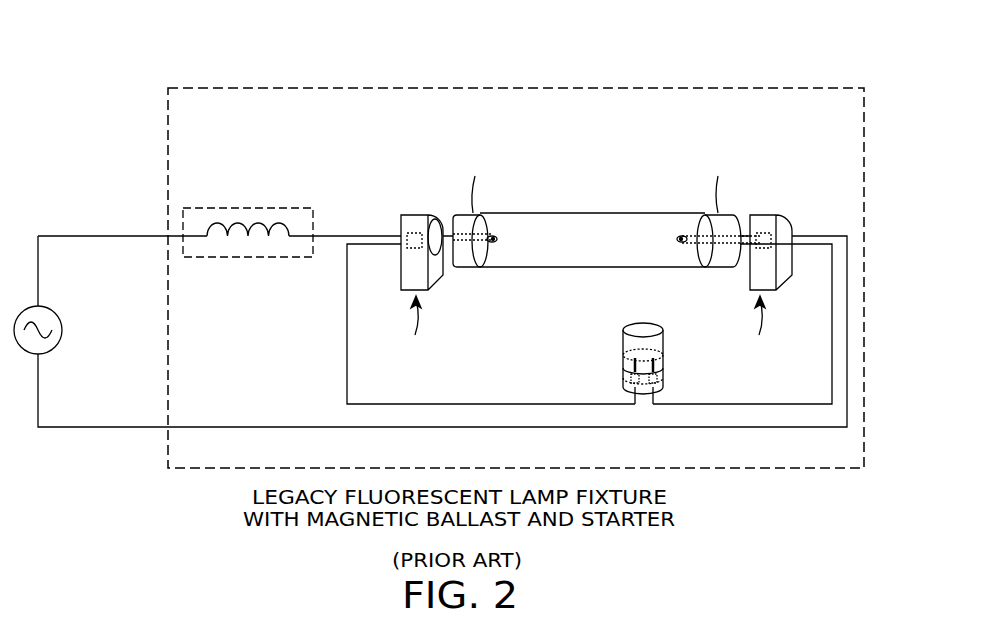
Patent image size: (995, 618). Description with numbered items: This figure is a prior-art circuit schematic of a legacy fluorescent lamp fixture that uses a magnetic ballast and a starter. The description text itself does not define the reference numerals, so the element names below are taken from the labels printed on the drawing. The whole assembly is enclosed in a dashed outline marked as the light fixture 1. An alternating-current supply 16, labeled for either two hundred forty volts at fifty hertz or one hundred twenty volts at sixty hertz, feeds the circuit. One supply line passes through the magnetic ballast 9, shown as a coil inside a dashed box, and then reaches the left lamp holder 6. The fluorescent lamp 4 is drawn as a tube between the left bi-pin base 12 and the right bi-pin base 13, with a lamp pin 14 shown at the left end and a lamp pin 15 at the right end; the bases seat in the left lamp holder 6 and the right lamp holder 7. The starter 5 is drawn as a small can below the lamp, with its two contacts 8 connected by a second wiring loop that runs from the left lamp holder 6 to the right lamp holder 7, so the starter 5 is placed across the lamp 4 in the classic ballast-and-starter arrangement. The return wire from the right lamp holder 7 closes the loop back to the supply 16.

The light fixture 1 is at (717, 88).
The T8 fluorescent lamp 4 is at (597, 202).
The starter 5 is at (590, 361).
The T8 lamp holder 6 is at (422, 215).
The T8 lamp holder 7 is at (776, 215).
The starter pins 8 is at (623, 372).
The magnetic ballast 9 is at (247, 208).
The G13 bi-pin base 12 is at (466, 267).
The G13 bi-pin base 13 is at (720, 267).
The lamp pin 14 is at (497, 242).
The lamp pin 15 is at (677, 242).
The AC power source 16 is at (57, 341).